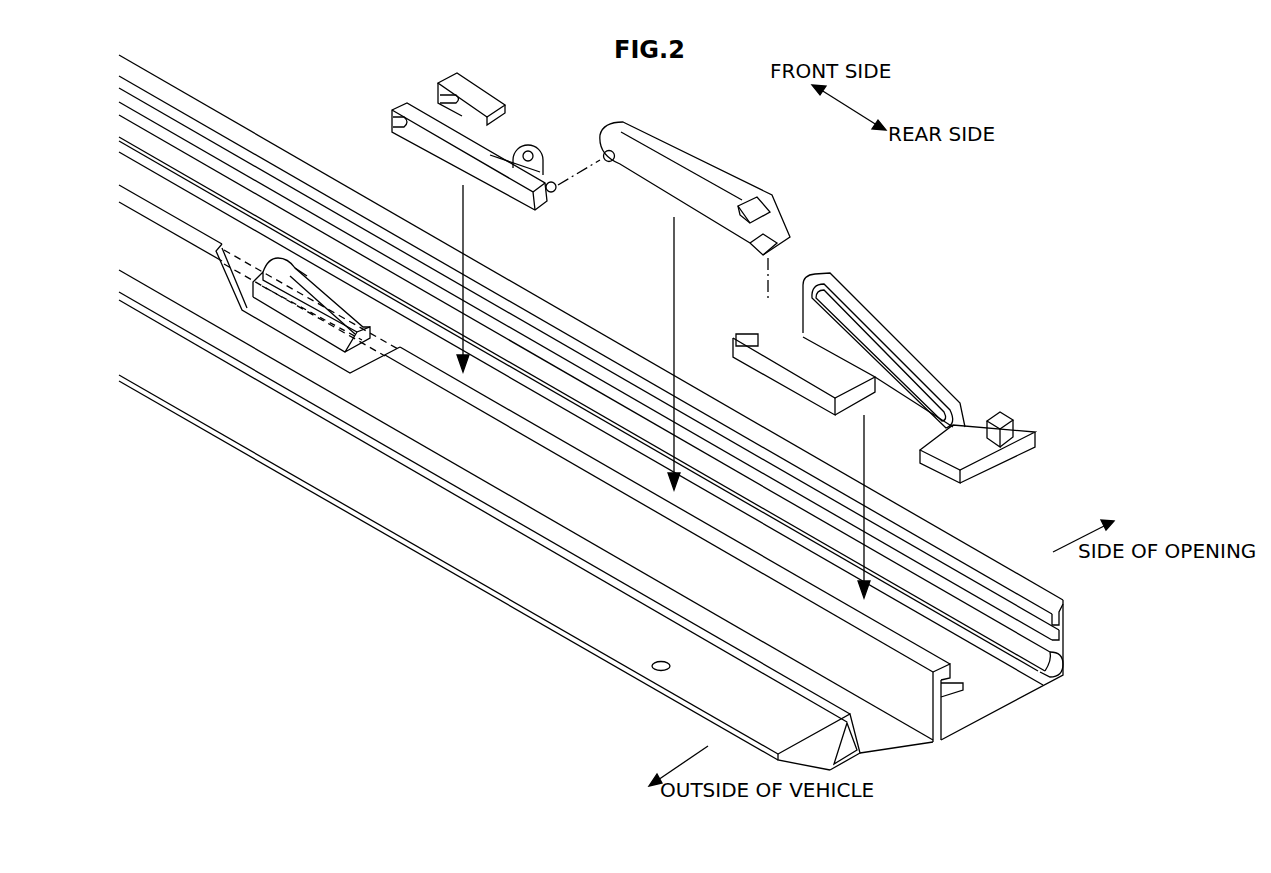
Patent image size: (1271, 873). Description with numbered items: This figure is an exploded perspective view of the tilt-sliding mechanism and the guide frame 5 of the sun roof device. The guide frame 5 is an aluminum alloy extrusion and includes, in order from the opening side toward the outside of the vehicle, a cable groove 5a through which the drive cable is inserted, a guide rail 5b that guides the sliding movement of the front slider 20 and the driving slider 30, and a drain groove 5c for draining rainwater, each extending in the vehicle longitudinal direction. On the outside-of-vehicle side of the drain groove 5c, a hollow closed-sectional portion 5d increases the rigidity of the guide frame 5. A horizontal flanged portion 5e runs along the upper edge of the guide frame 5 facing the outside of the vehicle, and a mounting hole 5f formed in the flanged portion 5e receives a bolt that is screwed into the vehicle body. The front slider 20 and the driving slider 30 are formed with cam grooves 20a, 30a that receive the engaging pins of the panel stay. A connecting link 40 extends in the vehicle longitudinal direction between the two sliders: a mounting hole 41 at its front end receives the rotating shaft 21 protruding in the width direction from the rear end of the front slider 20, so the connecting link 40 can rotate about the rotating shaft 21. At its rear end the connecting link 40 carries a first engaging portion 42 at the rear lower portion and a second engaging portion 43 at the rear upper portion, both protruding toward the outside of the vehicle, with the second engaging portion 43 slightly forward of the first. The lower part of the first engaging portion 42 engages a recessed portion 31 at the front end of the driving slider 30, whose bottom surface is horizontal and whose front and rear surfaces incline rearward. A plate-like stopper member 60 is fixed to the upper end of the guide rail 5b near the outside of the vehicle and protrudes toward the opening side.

The guide frame 5 is at (972, 540).
The cable groove 5a is at (1052, 666).
The guide rail 5b is at (985, 685).
The drain groove 5c is at (873, 725).
The hollow closed-sectional portion 5d is at (843, 757).
The flanged portion 5e is at (706, 688).
The mounting hole 5f is at (652, 667).
The front slider 20 is at (398, 105).
The cam groove 20a is at (524, 140).
The rotating shaft 21 is at (553, 194).
The driving slider 30 is at (940, 367).
The cam groove 30a is at (864, 325).
The recessed portion 31 is at (752, 348).
The connecting link 40 is at (689, 143).
The mounting hole 41 is at (611, 163).
The first engaging portion 42 is at (775, 243).
The second engaging portion 43 is at (757, 205).
The stopper member 60 is at (306, 333).